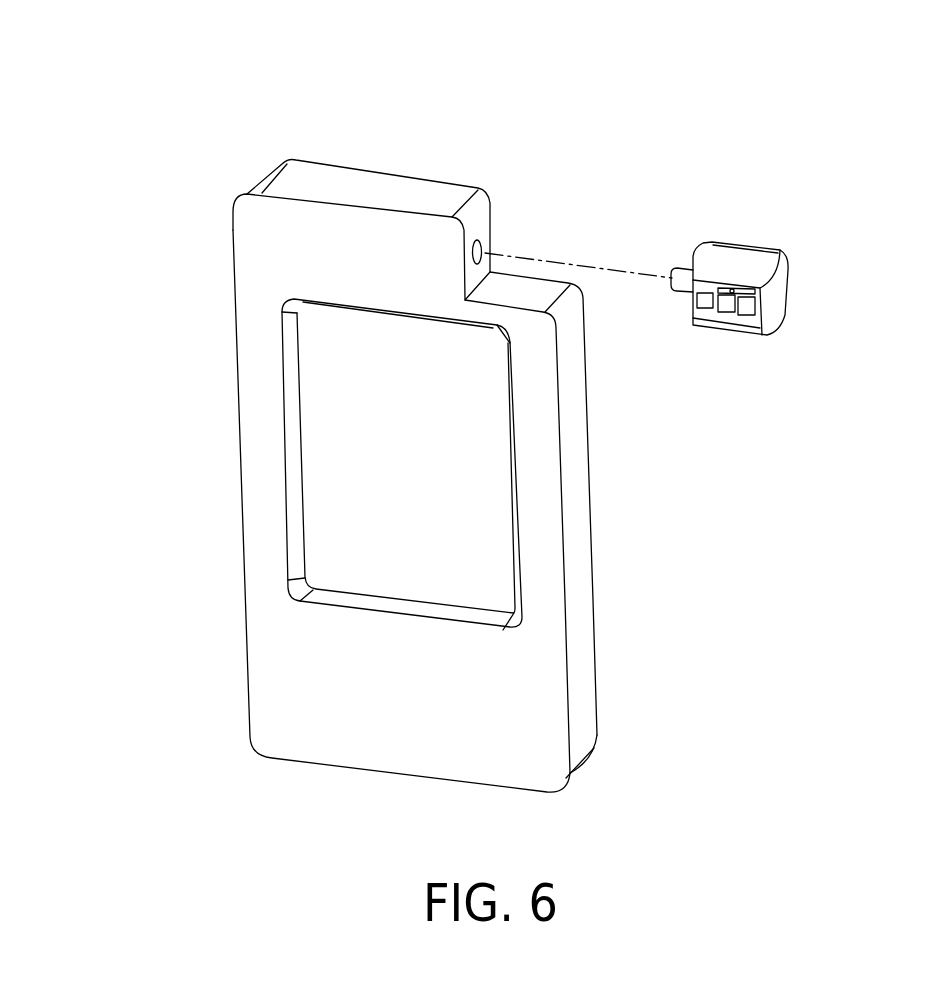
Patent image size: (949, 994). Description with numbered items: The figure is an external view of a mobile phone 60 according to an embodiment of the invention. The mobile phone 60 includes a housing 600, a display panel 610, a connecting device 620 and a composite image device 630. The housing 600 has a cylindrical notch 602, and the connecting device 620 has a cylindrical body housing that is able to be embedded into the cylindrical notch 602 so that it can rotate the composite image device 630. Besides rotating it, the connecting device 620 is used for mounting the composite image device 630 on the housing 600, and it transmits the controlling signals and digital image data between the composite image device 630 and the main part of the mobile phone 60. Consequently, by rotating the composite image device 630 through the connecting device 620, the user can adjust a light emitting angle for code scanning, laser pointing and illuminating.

The mobile phone 60 is at (807, 90).
The housing 600 is at (250, 283).
The cylindrical notch 602 is at (481, 248).
The display panel 610 is at (312, 423).
The connecting device 620 is at (680, 277).
The composite image device 630 is at (755, 256).